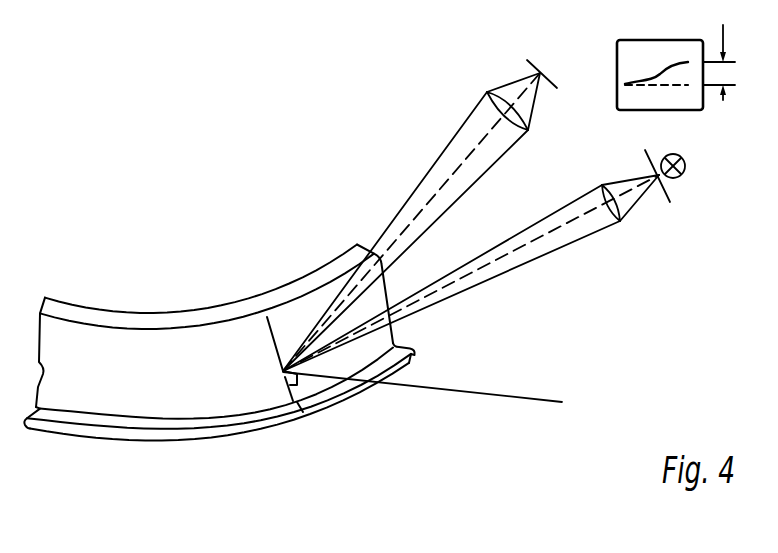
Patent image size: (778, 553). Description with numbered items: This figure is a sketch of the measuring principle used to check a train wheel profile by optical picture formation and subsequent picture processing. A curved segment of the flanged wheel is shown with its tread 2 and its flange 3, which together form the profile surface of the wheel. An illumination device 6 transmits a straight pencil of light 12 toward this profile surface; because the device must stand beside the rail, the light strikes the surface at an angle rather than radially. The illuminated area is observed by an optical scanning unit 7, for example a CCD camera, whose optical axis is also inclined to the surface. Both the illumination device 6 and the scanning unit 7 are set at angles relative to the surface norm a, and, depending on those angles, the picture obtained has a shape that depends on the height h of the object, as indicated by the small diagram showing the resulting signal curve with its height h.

The tread 2 is at (188, 352).
The flange 3 is at (123, 432).
The illumination device 6 is at (669, 235).
The optical scanning unit 7 is at (482, 53).
The light 12 is at (507, 270).
The surface norm a is at (437, 390).
The height h is at (681, 67).